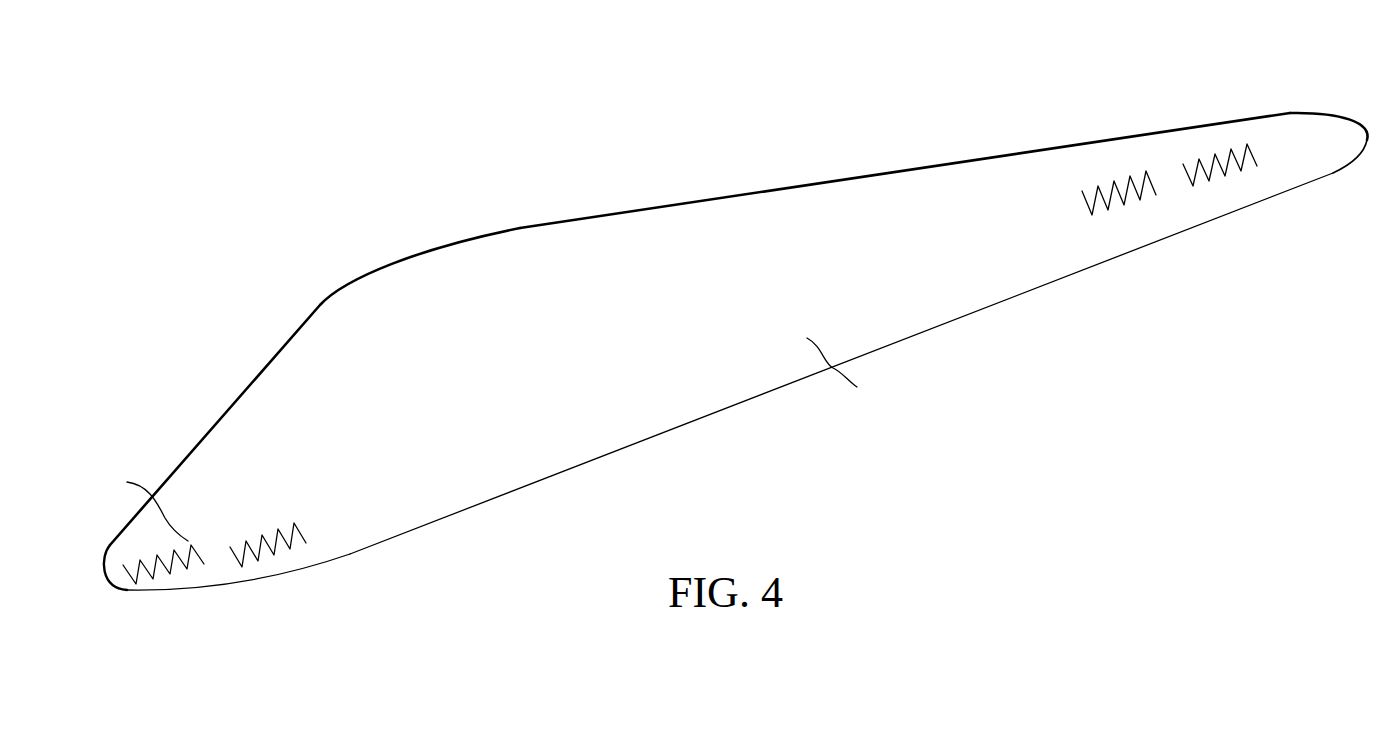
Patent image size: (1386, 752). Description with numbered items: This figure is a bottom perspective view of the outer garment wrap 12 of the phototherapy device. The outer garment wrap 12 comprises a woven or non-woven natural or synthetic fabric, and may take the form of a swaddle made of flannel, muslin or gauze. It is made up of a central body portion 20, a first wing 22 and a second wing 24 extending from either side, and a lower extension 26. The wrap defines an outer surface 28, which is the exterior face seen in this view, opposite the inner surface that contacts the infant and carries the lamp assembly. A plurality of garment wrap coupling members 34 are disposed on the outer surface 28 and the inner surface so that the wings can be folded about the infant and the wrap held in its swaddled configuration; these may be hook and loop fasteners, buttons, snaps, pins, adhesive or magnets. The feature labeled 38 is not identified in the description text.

The outer garment wrap 12 is at (659, 188).
The central body portion 20 is at (637, 453).
The first wing 22 is at (121, 595).
The second wing 24 is at (1318, 179).
The lower extension 26 is at (433, 227).
The outer surface 28 is at (851, 372).
The garment wrap coupling members 34 is at (135, 550).
The fillet region 38 is at (138, 503).